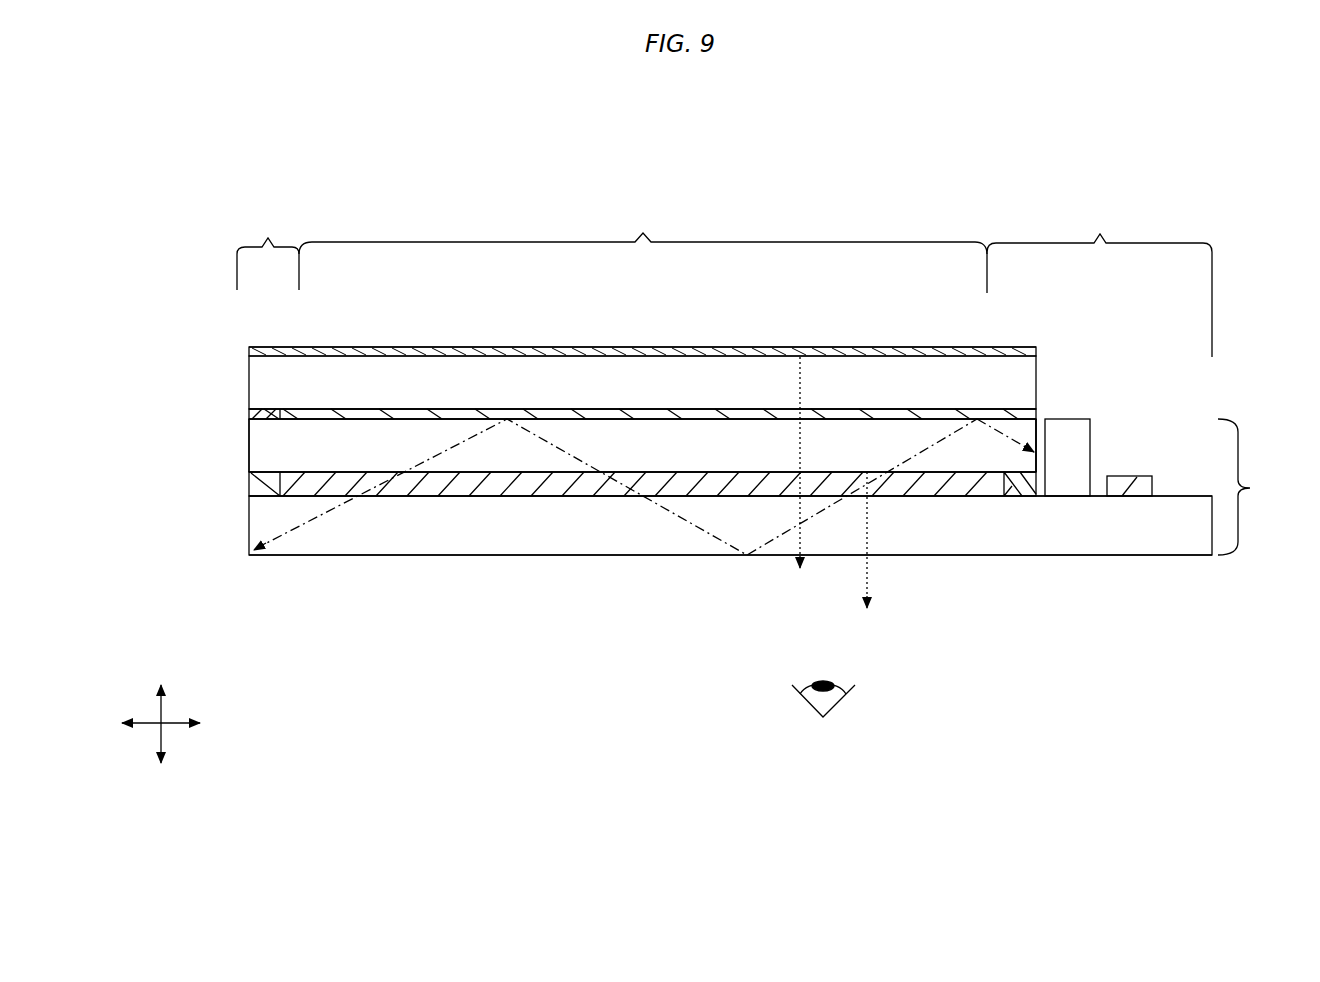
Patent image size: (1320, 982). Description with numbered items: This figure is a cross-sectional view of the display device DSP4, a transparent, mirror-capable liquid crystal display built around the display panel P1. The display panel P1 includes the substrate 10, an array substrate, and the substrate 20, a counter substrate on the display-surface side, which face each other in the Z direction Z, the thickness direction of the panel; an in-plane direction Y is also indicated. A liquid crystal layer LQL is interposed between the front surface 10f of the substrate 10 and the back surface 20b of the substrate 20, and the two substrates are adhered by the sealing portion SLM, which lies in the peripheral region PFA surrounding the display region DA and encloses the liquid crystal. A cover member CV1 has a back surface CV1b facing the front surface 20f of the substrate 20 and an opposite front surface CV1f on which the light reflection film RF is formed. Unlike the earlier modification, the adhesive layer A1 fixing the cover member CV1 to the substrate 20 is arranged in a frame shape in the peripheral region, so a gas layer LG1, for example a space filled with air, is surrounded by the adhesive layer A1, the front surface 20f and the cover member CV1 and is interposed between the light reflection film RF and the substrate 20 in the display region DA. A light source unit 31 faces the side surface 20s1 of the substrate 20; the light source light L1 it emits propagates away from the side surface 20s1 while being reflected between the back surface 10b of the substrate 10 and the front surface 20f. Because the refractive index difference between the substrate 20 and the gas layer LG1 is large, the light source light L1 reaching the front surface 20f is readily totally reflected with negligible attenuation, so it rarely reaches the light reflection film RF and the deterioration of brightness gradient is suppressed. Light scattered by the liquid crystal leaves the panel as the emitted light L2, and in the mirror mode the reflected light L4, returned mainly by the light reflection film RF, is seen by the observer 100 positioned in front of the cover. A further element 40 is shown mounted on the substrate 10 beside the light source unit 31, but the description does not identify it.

The display device DSP4 is at (462, 212).
The peripheral region PFA is at (724, 280).
The display region DA is at (643, 227).
The light reflection film RF is at (365, 348).
The cover member CV1 is at (270, 382).
The front surface of cover member CV1f is at (590, 346).
The back surface of cover member CV1b is at (626, 412).
The adhesive layer A1 is at (250, 414).
The substrate 20 is at (277, 448).
The front surface of substrate 20f is at (527, 416).
The back surface of substrate 20b is at (752, 488).
The side surface of substrate 20s1 is at (1040, 438).
The gas layer LG1 is at (836, 424).
The sealing portion SLM is at (257, 486).
The substrate 10 is at (278, 527).
The front surface of substrate 10f is at (567, 480).
The back surface of substrate 10b is at (533, 557).
The light source unit 31 is at (1063, 474).
The electronic component 40 is at (1131, 480).
The display panel P1 is at (1253, 487).
The liquid crystal layer LQL is at (375, 486).
The light source light L1 is at (934, 412).
The reflected light L4 is at (800, 392).
The emitted light L2 is at (838, 565).
The observer 100 is at (860, 708).
The Z direction Z is at (149, 715).
The Y axis Y is at (167, 742).